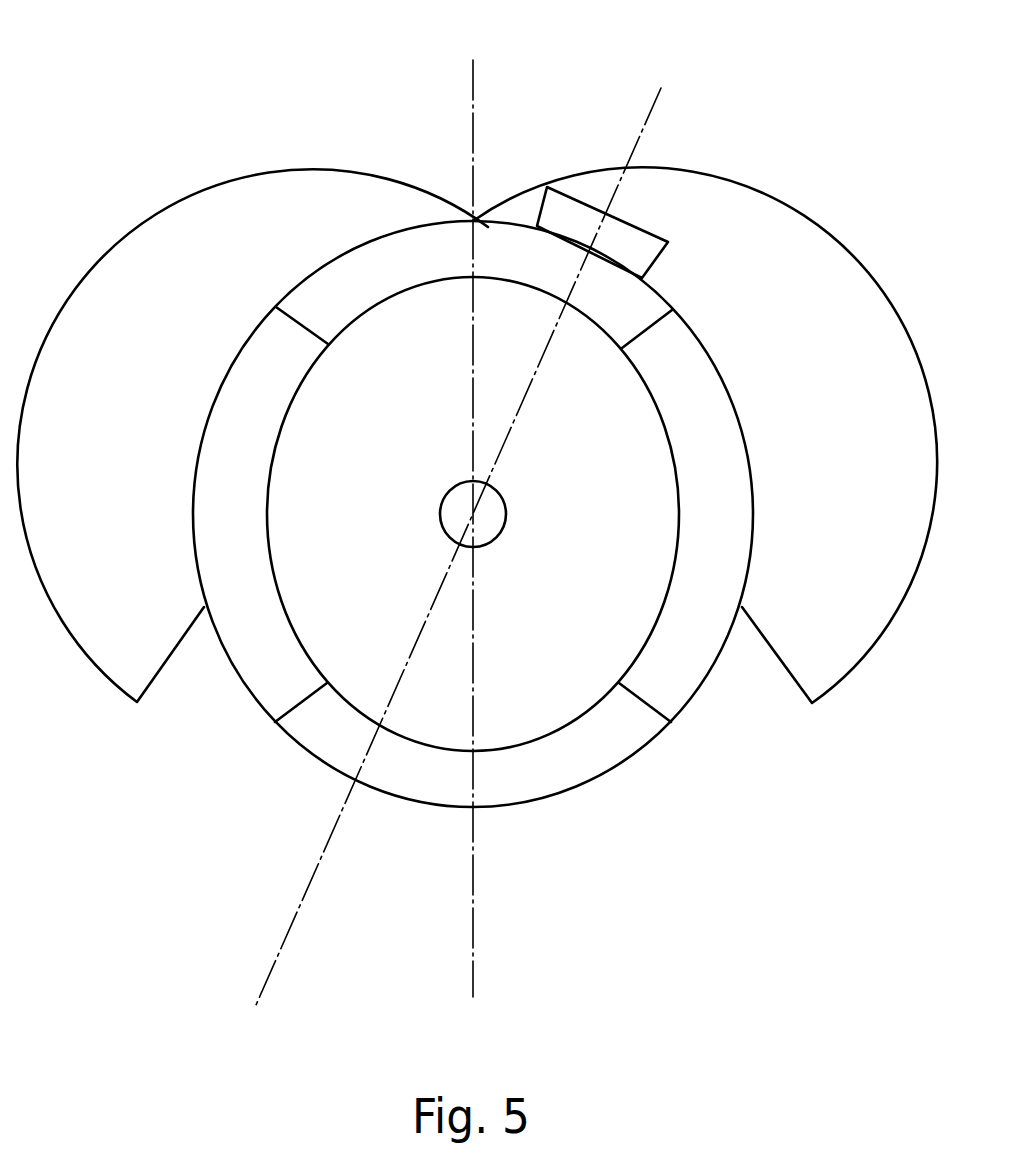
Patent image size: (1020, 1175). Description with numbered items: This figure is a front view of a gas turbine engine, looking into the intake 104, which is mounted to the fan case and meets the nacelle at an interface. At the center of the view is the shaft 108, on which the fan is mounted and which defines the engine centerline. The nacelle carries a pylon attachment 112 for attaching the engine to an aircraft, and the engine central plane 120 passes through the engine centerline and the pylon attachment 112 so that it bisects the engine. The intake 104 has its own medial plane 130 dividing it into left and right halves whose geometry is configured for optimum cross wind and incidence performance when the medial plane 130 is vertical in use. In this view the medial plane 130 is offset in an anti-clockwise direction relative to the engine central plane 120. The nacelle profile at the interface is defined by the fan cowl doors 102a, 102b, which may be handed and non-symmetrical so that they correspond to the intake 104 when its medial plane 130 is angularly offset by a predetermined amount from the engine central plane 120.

The fan cowl door 102a is at (757, 200).
The fan cowl door 102b is at (165, 205).
The intake 104 is at (753, 478).
The shaft 108 is at (440, 515).
The pylon attachment 112 is at (657, 260).
The engine central plane 120 is at (275, 962).
The medial plane 130 is at (473, 98).